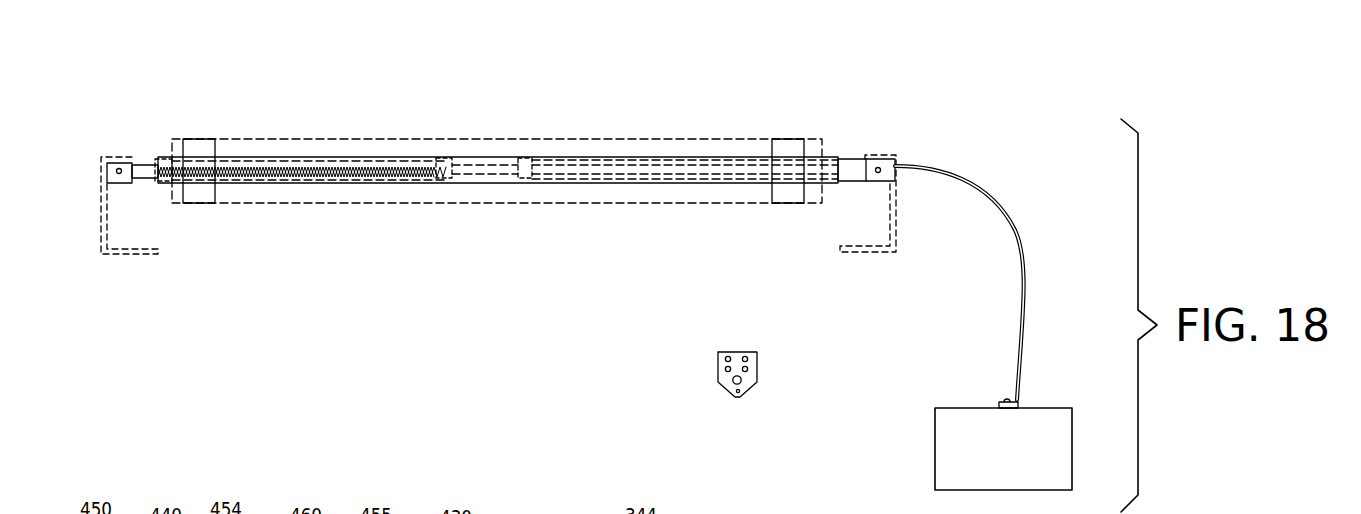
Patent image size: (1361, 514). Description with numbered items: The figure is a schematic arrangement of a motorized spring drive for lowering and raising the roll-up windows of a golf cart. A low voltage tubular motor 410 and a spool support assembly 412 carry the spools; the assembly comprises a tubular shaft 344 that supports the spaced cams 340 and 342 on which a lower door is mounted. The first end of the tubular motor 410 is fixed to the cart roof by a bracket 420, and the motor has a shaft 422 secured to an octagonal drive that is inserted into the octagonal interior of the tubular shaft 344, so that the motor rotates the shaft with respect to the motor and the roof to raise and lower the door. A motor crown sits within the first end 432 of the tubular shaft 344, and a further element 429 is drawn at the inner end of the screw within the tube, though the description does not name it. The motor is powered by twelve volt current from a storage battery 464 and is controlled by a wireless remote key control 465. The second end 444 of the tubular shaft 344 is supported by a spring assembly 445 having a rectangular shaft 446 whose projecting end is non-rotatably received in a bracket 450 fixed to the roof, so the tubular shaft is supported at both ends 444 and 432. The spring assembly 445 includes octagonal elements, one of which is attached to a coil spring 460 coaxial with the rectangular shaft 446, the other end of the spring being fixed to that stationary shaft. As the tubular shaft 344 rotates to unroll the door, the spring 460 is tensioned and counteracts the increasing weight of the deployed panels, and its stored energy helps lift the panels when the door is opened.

The cam 340 is at (200, 202).
The cam 342 is at (786, 202).
The tubular shaft 344 is at (340, 160).
The tubular motor 410 is at (702, 155).
The spool support assembly 412 is at (577, 184).
The bracket 420 is at (893, 230).
The shaft 422 is at (682, 166).
The nut 429 is at (453, 170).
The first end 432 is at (838, 160).
The second end 444 is at (158, 183).
The spring assembly 445 is at (260, 182).
The rectangular shaft 446 is at (140, 168).
The bracket 450 is at (130, 255).
The coil spring 460 is at (367, 176).
The storage battery 464 is at (935, 443).
The wireless remote key control 465 is at (757, 362).